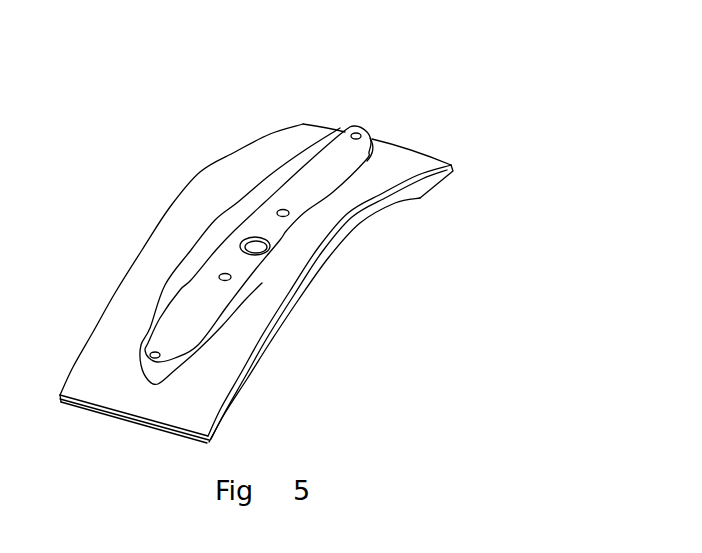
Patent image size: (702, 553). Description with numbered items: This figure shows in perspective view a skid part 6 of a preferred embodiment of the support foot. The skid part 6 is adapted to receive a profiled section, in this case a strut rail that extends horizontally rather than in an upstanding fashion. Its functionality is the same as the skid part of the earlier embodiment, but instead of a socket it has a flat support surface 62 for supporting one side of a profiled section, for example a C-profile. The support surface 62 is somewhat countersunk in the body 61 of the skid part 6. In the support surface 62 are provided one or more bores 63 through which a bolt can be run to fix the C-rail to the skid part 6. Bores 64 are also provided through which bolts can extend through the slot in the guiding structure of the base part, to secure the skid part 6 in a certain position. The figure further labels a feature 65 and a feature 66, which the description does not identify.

The skid part 6 is at (267, 225).
The body 61 is at (289, 278).
The support surface 62 is at (207, 196).
The bores 63 is at (150, 352).
The bores 64 is at (219, 275).
The central hole 65 is at (255, 247).
The edge flange 66 is at (401, 170).